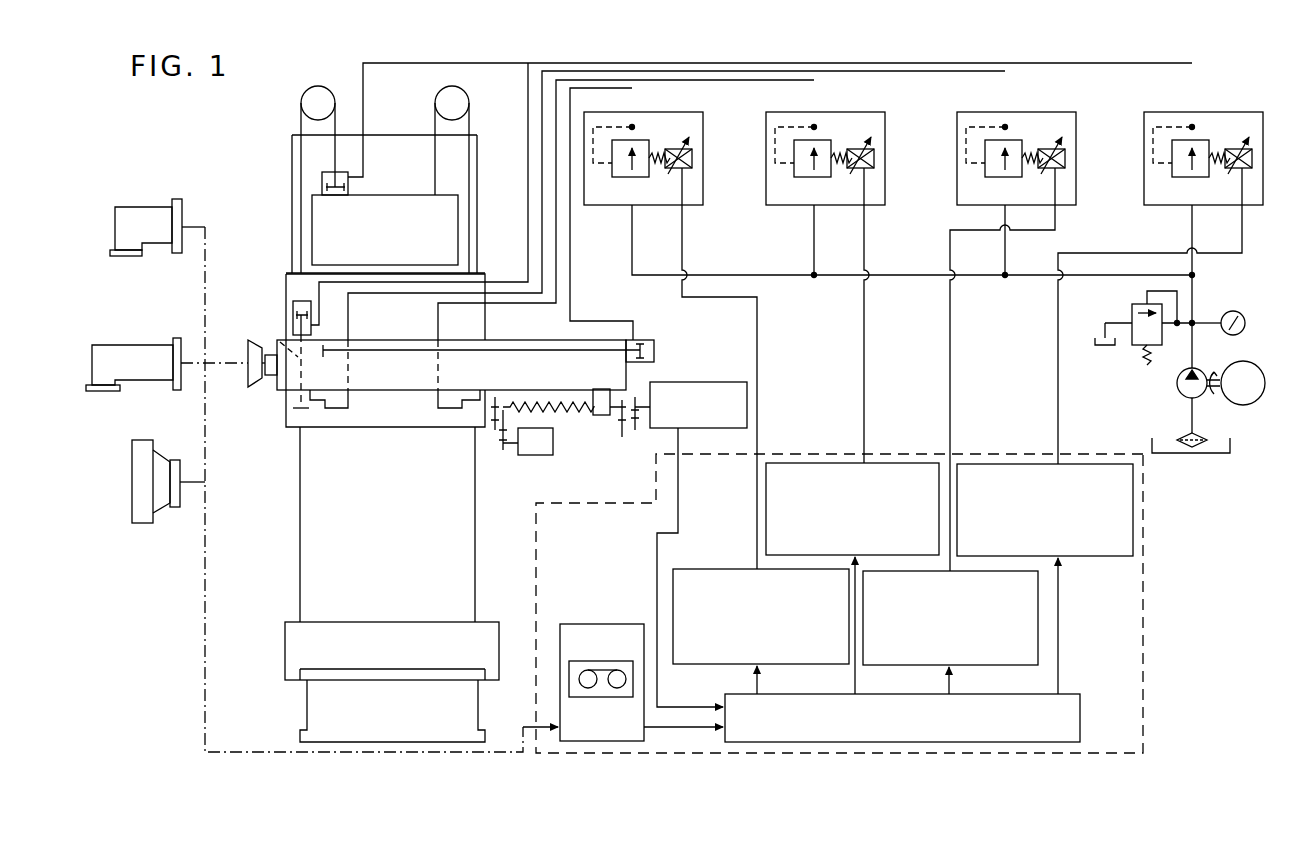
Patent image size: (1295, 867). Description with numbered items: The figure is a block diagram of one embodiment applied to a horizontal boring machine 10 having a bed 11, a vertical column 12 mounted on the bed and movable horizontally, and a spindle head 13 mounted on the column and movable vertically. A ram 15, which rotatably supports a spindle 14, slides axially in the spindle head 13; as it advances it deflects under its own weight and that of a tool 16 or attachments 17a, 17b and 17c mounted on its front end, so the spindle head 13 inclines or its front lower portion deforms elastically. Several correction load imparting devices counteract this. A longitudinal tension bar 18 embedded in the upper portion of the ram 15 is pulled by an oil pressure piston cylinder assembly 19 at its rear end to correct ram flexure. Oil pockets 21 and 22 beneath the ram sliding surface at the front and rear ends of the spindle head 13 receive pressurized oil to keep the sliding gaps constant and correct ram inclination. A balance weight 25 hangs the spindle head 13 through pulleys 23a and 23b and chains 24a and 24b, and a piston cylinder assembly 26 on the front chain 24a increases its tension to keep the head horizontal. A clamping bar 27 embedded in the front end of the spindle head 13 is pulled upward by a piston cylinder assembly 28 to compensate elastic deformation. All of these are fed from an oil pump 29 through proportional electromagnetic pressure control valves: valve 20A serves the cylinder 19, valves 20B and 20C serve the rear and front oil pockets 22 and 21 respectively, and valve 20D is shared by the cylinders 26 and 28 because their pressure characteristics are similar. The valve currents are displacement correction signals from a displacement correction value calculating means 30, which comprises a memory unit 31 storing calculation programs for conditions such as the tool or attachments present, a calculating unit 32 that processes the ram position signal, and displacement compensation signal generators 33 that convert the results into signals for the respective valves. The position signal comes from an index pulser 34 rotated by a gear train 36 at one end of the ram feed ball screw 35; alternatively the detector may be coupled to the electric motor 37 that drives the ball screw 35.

The horizontal boring machine 10 is at (282, 266).
The bed 11 is at (318, 708).
The vertical column 12 is at (300, 532).
The spindle head 13 is at (287, 278).
The spindle 14 is at (273, 378).
The ram 15 is at (390, 392).
The tool 16 is at (250, 382).
The attachment 17a is at (140, 207).
The attachment 17b is at (140, 345).
The attachment 17c is at (143, 523).
The tension bar 18 is at (385, 348).
The oil pressure piston cylinder assembly 19 is at (654, 345).
The proportional electromagnetic type pressure control valve 20A is at (684, 113).
The proportional electromagnetic type pressure control valve 20B is at (866, 113).
The proportional electromagnetic type pressure control valve 20C is at (1056, 113).
The proportional electromagnetic type pressure control valve 20D is at (1216, 113).
The oil pocket 21 is at (322, 412).
The oil pocket 22 is at (470, 410).
The pulley 23a is at (316, 96).
The pulley 23b is at (436, 103).
The chain 24a is at (292, 156).
The chain 24b is at (470, 122).
The balance weight 25 is at (390, 274).
The piston cylinder assembly 26 is at (322, 185).
The clamping bar 27 is at (280, 342).
The piston cylinder assembly 28 is at (293, 305).
The oil pump 29 is at (1177, 386).
The displacement correction value calculating means 30 is at (865, 757).
The memory unit 31 is at (592, 622).
The calculating unit 32 is at (1070, 694).
The displacement compensation signal generator 33 is at (737, 569).
The index pulser 34 is at (715, 382).
The ball screw 35 is at (562, 410).
The gear train 36 is at (620, 425).
The electric motor 37 is at (528, 456).